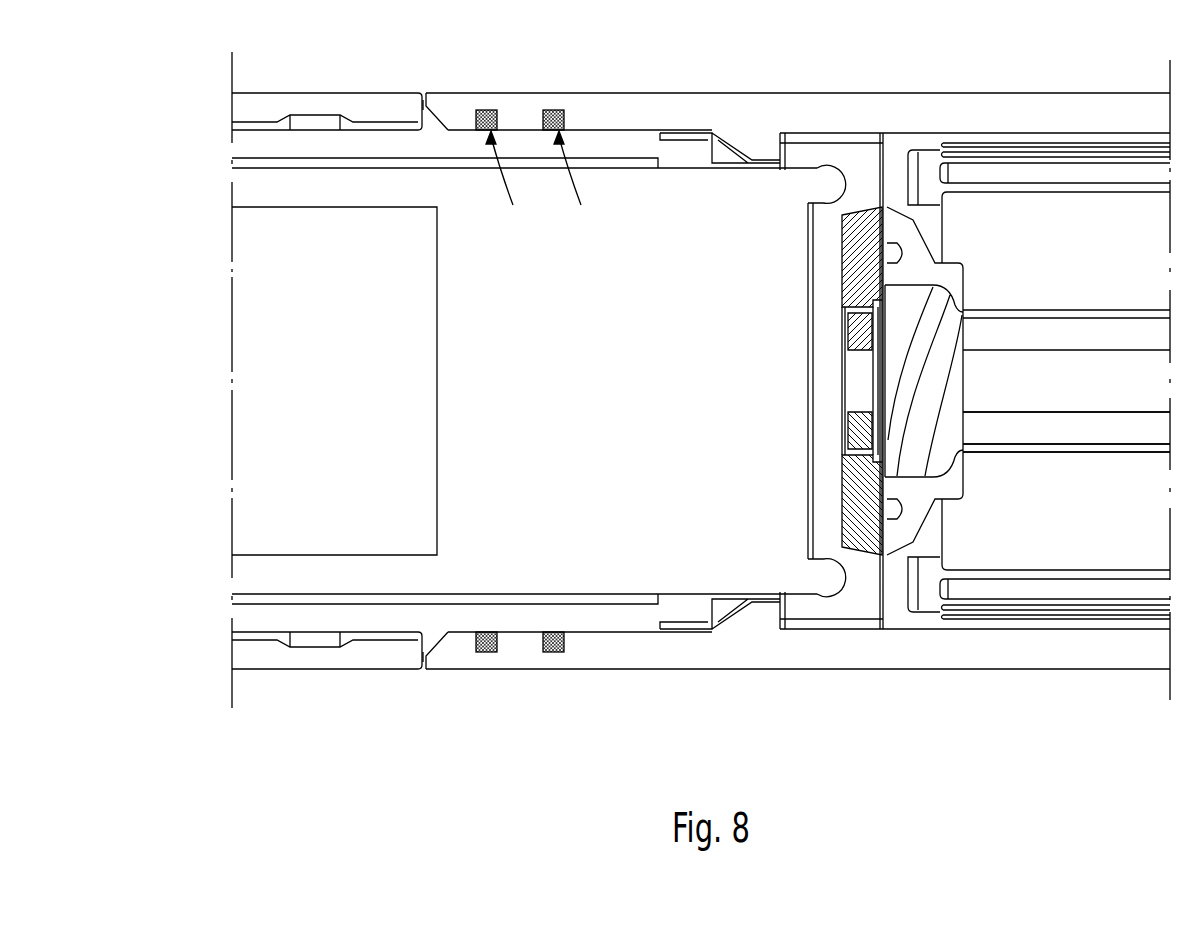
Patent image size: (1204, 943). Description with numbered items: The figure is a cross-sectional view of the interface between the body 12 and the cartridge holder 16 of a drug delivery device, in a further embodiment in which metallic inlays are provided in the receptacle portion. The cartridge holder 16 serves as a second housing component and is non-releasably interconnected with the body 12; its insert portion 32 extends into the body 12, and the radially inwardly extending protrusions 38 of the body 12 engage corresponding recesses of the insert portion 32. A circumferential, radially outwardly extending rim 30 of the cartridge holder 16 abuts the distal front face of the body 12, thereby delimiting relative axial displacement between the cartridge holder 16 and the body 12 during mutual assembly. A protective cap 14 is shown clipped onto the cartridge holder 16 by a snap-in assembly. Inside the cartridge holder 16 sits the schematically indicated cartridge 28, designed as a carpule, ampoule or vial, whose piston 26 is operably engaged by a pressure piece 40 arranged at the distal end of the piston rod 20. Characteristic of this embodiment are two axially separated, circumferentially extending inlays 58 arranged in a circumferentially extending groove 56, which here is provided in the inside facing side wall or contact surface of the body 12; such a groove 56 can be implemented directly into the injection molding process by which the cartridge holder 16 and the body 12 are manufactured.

The body 12 is at (810, 107).
The protective cap 14 is at (384, 107).
The cartridge holder 16 is at (262, 143).
The piston rod 20 is at (915, 303).
The piston 26 is at (256, 293).
The cartridge 28 is at (313, 187).
The rim 30 is at (425, 103).
The insert portion 32 is at (627, 143).
The protrusions 38 is at (757, 145).
The pressure piece 40 is at (863, 230).
The groove 56 is at (539, 179).
The inlays 58 is at (487, 110).